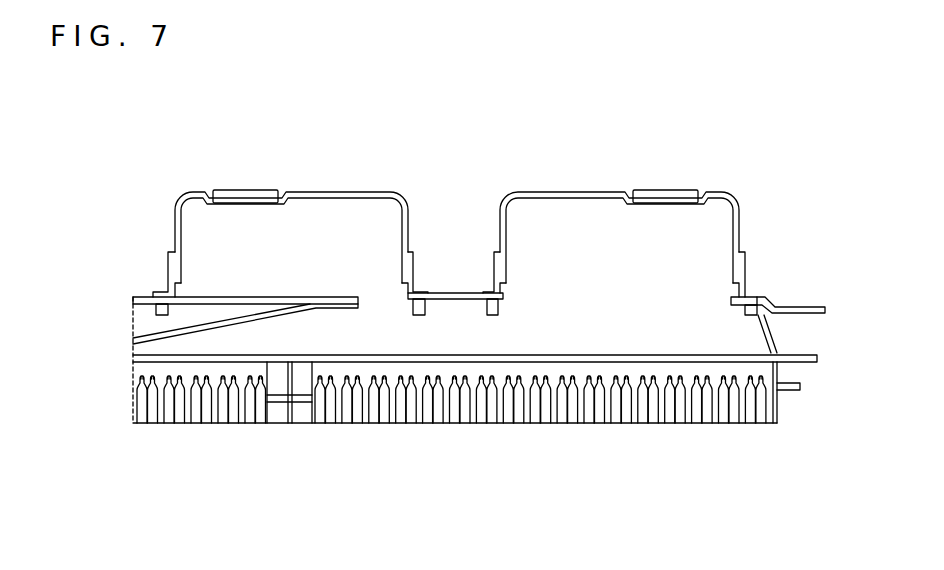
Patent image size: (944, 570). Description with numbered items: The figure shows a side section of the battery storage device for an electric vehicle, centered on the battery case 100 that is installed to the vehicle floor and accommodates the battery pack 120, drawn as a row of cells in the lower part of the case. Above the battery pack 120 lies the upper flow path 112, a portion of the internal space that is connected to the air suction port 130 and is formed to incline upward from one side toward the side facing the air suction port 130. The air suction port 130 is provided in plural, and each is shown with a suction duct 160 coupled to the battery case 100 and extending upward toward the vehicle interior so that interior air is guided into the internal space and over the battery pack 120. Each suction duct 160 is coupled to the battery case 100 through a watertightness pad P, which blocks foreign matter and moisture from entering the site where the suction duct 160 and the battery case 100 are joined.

The suction duct 160 is at (315, 192).
The air suction port 130 is at (652, 302).
The watertightness pad P is at (421, 308).
The battery case 100 is at (208, 323).
The upper flow path 112 is at (462, 333).
The battery pack 120 is at (678, 407).